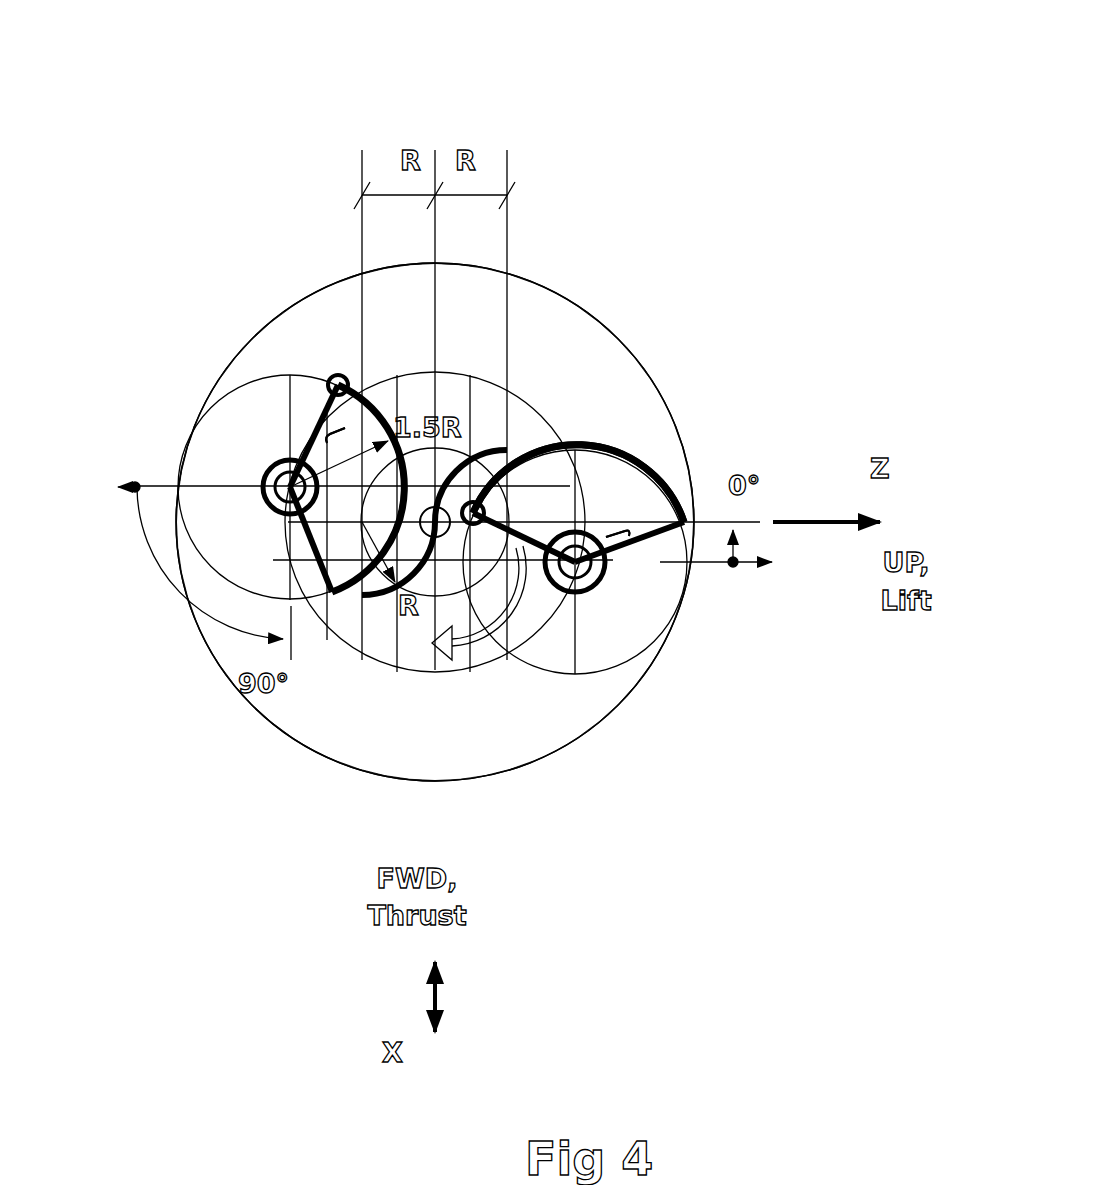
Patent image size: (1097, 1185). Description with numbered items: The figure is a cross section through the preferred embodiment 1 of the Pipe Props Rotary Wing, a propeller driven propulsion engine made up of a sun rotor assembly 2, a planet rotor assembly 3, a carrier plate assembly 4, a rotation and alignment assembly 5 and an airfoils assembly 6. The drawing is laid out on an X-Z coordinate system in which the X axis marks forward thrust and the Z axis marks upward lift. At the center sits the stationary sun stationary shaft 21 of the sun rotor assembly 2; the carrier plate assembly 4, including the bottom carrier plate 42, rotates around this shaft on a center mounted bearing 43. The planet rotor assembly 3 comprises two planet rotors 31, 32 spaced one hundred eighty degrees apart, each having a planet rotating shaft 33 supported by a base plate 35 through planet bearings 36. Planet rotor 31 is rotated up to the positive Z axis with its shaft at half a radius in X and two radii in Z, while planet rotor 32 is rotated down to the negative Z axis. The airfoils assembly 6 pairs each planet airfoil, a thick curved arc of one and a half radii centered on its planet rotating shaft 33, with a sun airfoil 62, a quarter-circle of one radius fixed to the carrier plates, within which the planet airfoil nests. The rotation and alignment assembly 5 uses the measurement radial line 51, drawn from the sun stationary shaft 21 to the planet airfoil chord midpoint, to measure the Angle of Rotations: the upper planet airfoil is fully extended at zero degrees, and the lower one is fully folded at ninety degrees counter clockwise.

The preferred embodiment 1 is at (870, 83).
The sun rotor assembly 2 is at (552, 459).
The planet rotor assembly 3 is at (552, 459).
The carrier plate assembly 4 is at (552, 459).
The rotation and alignment assembly 5 is at (552, 459).
The airfoils assembly 6 is at (830, 205).
The sun stationary shaft 21 is at (510, 695).
The planet rotor 31 is at (620, 574).
The planet rotor 32 is at (223, 539).
The planet rotating shaft 33 is at (223, 539).
The base plate 35 is at (333, 433).
The planet bearing 36 is at (223, 539).
The bottom carrier plate 42 is at (253, 720).
The center mounted bearing 43 is at (441, 536).
The measurement radial line 51 is at (435, 528).
The sun airfoil 62 is at (507, 447).